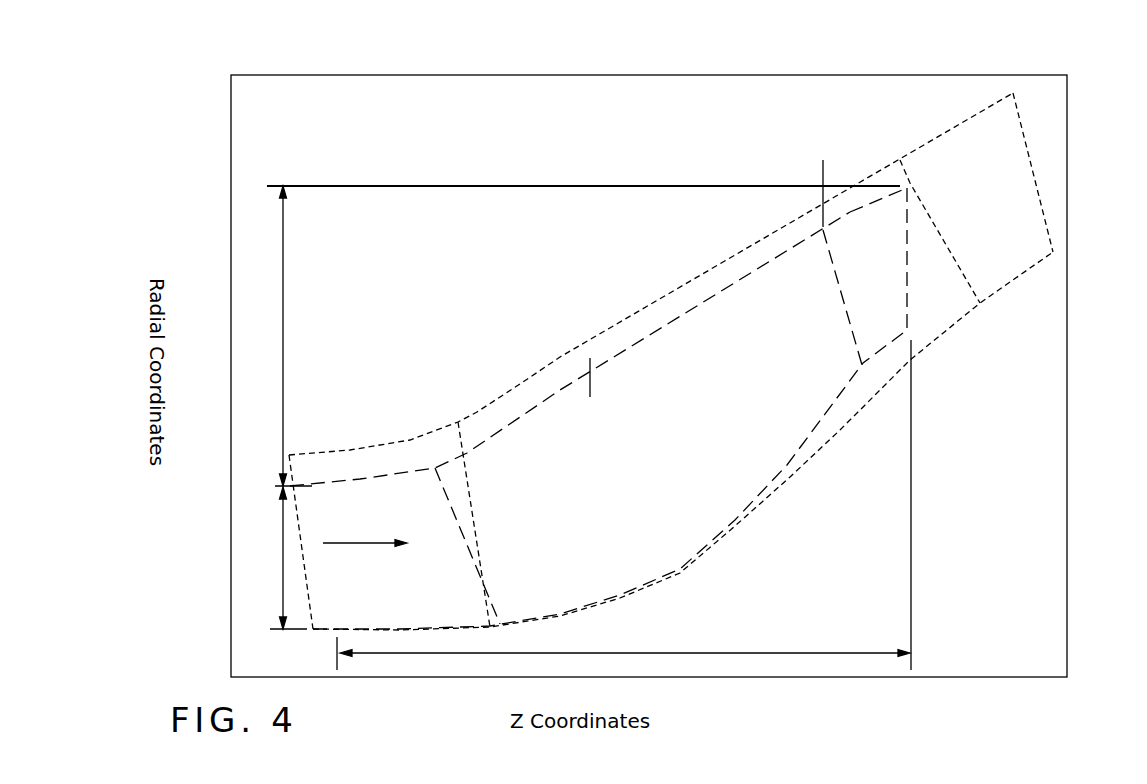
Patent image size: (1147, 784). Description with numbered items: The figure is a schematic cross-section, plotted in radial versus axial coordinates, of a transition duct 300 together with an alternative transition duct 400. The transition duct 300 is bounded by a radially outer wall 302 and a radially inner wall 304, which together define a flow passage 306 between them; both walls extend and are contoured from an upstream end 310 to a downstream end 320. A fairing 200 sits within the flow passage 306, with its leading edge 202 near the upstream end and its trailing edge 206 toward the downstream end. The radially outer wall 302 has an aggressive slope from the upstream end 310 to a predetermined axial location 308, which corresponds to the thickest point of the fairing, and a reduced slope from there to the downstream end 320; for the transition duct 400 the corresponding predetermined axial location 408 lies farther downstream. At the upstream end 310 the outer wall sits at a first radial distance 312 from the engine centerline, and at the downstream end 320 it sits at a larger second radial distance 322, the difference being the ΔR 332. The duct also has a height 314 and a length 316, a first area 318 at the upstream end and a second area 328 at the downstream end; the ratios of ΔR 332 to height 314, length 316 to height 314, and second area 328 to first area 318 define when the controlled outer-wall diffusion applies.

The transition duct 400 is at (1022, 84).
The transition duct 300 is at (871, 184).
The fairing 200 is at (696, 308).
The radially outer wall 302 is at (848, 217).
The radially inner wall 304 is at (787, 468).
The downstream end 320 is at (919, 180).
The second area 328 is at (886, 266).
The trailing edge 206 is at (833, 268).
The leading edge 202 is at (473, 518).
The first area 318 is at (416, 598).
The second radial distance 322 is at (303, 187).
The predetermined axial location 408 is at (823, 182).
The predetermined axial location 308 is at (590, 375).
The flow passage 306 is at (357, 543).
The ΔR 332 is at (283, 215).
The first radial distance 312 is at (298, 482).
The height 314 is at (283, 553).
The upstream end 310 is at (320, 638).
The length 316 is at (647, 653).